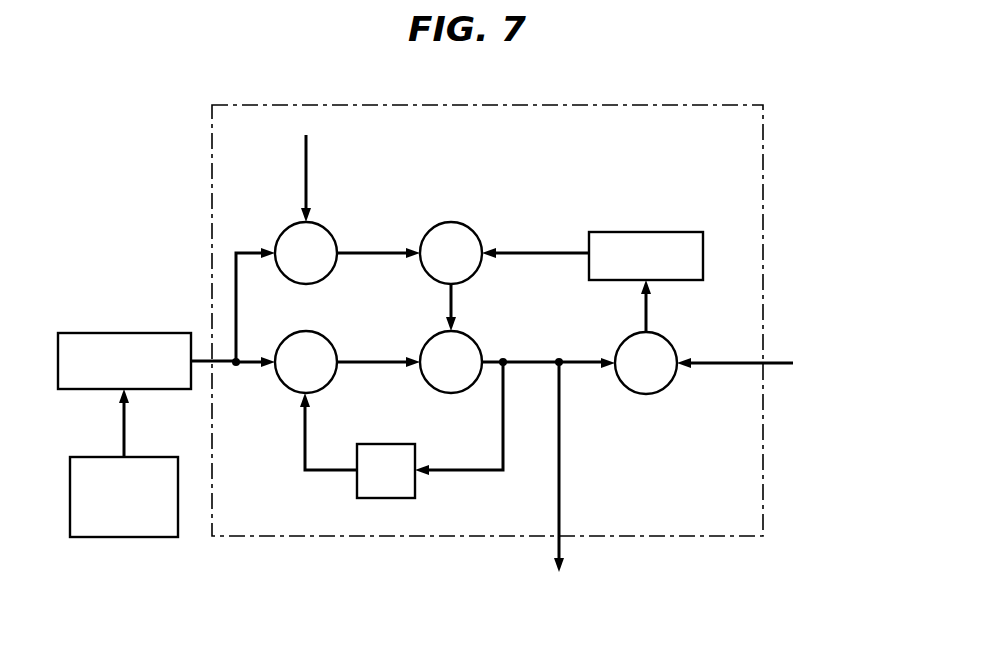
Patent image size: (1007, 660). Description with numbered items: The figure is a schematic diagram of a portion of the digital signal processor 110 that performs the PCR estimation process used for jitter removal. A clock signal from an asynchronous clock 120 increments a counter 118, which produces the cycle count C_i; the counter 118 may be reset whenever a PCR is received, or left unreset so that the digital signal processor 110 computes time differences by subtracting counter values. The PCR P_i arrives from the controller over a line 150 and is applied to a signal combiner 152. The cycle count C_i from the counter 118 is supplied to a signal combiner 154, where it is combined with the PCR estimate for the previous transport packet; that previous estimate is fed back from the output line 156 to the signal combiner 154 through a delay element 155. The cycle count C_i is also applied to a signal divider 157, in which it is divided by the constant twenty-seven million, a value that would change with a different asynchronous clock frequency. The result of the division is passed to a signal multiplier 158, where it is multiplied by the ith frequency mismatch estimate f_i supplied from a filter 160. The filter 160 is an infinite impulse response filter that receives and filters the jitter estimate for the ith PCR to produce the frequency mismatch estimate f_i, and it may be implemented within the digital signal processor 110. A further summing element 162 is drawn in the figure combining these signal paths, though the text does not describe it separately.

The digital signal processor 110 is at (722, 105).
The counter 118 is at (100, 333).
The asynchronous clock 120 is at (90, 457).
The line 150 is at (736, 368).
The signal combiner 152 is at (640, 395).
The signal combiner 154 is at (329, 334).
The delay element 155 is at (415, 490).
The output line 156 is at (530, 368).
The signal divider 157 is at (330, 229).
The signal multiplier 158 is at (450, 222).
The filter 160 is at (660, 232).
The summing node 162 is at (470, 333).